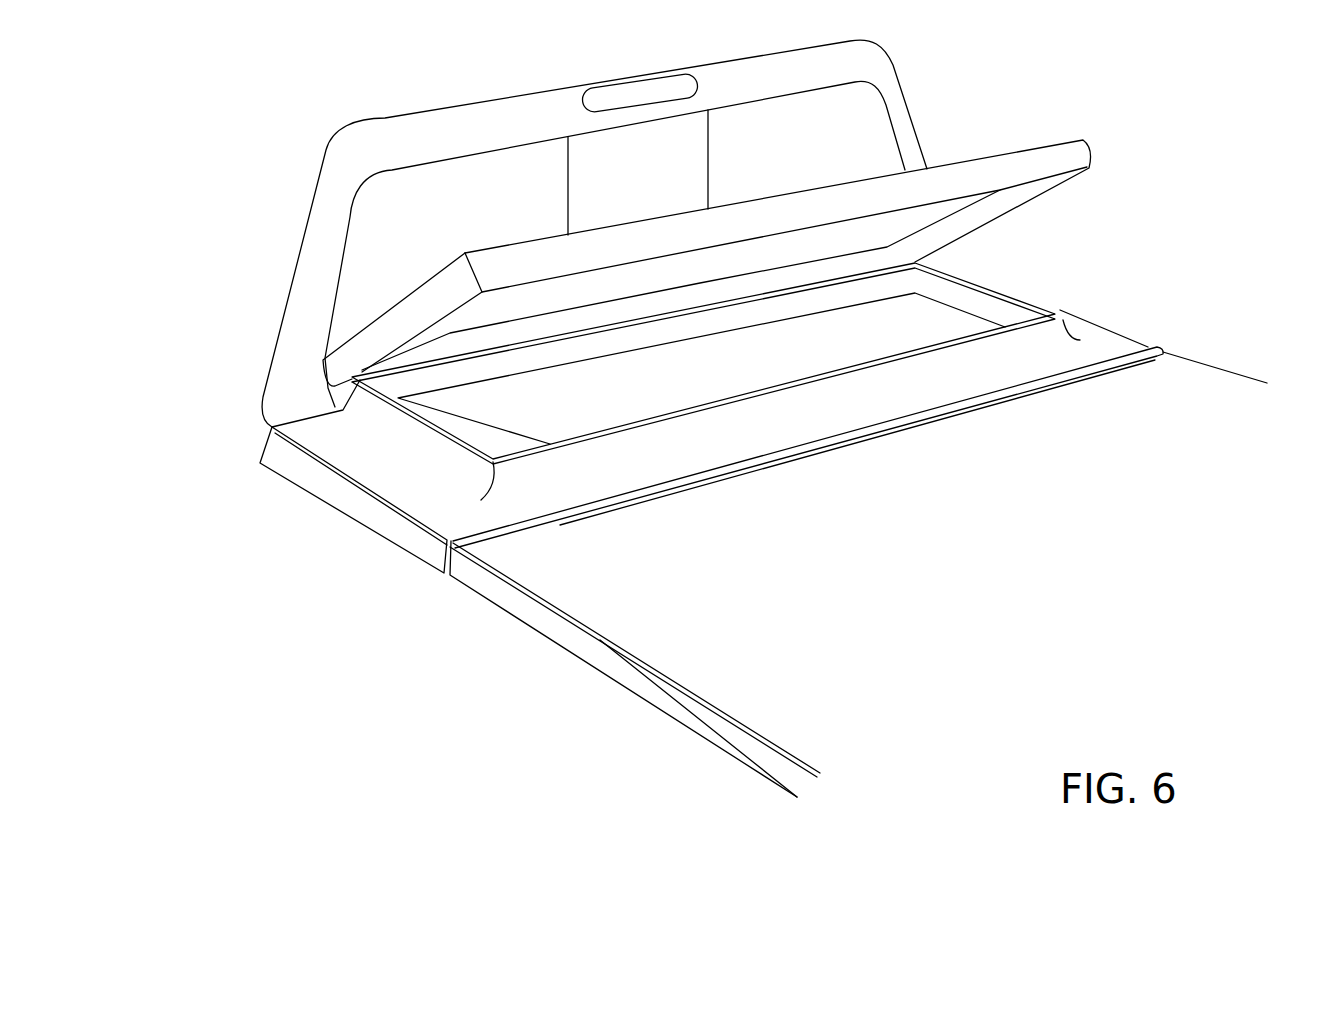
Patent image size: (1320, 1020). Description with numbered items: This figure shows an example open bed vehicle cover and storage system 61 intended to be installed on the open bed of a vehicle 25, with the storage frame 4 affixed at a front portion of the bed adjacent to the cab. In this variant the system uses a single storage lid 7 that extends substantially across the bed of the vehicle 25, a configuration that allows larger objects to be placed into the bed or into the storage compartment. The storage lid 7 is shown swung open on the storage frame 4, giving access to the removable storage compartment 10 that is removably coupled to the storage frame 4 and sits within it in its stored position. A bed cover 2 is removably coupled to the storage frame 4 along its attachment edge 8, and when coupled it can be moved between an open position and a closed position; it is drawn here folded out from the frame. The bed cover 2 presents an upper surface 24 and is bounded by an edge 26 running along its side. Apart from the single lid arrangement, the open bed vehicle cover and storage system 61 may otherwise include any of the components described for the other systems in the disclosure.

The bed cover 2 is at (1097, 479).
The storage frame 4 is at (400, 522).
The storage lid 7 is at (739, 218).
The attachment edge 8 is at (743, 447).
The removable storage compartment 10 is at (918, 318).
The upper surface 24 is at (718, 628).
The vehicle 25 is at (306, 197).
The edge 26 is at (735, 748).
The open bed vehicle cover and storage system 61 is at (312, 776).